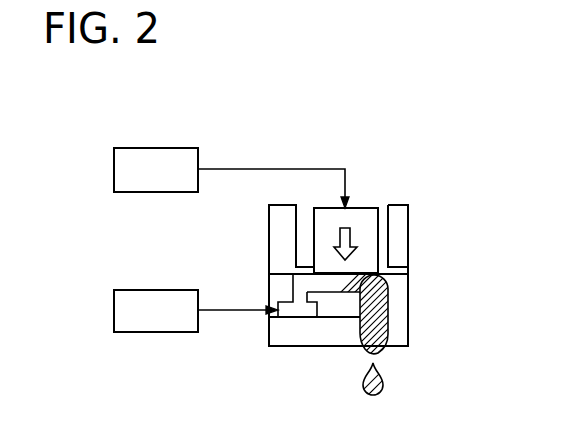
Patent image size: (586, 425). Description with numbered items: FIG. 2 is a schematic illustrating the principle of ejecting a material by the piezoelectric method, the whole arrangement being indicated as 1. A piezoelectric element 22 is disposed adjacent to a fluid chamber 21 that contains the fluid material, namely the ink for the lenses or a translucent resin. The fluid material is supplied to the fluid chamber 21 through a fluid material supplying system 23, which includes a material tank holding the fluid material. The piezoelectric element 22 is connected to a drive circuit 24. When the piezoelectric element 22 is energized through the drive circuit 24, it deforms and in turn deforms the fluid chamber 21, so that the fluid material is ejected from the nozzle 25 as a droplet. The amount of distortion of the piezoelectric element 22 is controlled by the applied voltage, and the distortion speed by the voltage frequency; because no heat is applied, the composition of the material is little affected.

The drop discharge device 1 is at (435, 153).
The fluid chamber 21 is at (388, 294).
The piezoelectric element 22 is at (367, 208).
The fluid material supplying system 23 is at (148, 290).
The drive circuit 24 is at (157, 148).
The nozzle 25 is at (378, 353).